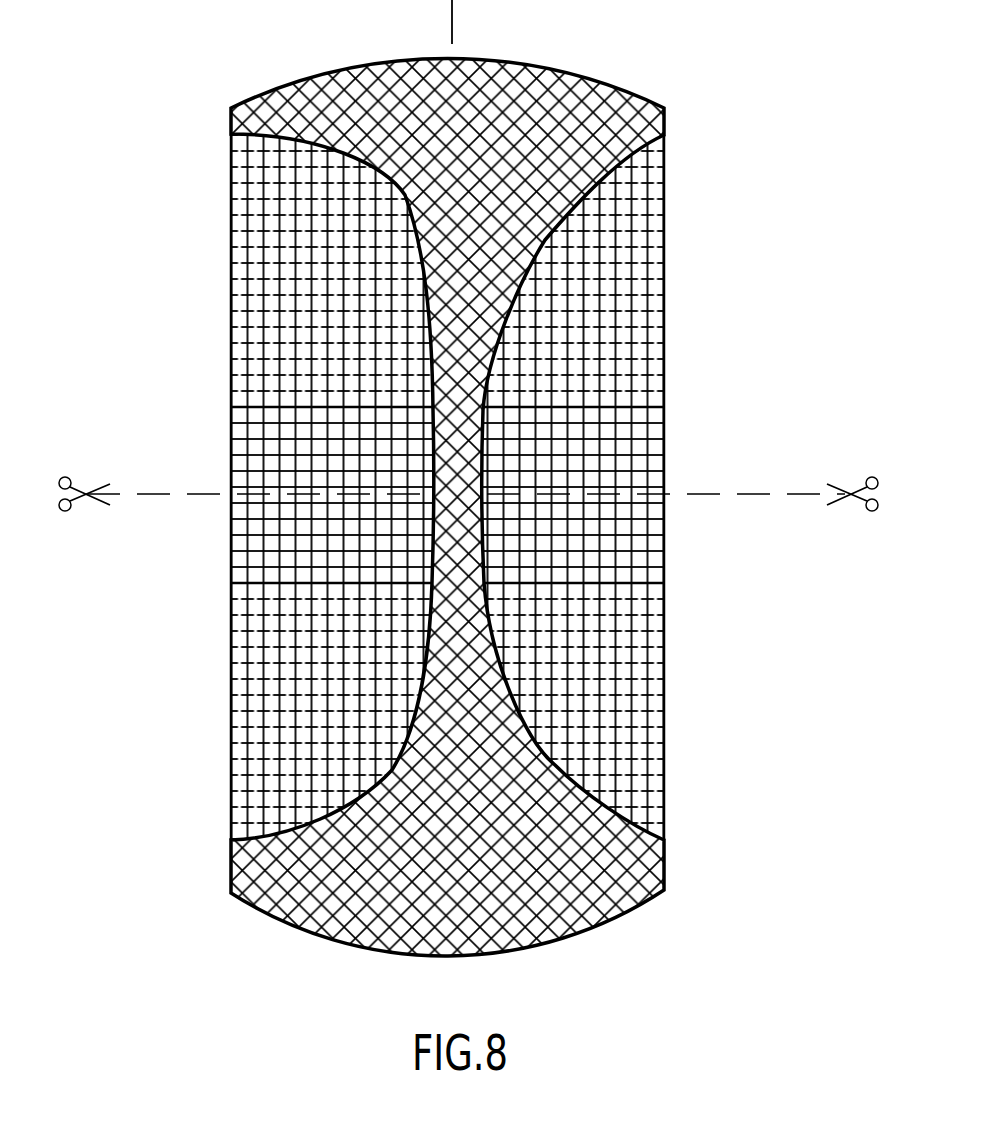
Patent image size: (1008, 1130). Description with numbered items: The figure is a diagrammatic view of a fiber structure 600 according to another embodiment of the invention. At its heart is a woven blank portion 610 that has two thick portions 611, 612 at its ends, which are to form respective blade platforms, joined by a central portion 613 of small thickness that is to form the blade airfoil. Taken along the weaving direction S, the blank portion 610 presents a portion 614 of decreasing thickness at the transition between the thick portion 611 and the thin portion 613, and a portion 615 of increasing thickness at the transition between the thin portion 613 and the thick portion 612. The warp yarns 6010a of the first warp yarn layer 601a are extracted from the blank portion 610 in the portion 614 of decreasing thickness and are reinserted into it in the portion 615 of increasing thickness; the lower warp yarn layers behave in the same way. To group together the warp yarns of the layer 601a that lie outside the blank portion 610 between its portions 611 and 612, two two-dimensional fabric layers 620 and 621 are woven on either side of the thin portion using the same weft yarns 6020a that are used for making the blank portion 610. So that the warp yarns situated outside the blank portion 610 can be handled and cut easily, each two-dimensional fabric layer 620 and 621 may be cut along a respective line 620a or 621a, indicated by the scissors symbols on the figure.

The fiber structure 600 is at (168, 255).
The weaving direction S is at (452, 12).
The blank portion 610 is at (350, 797).
The thick portion 611 is at (636, 871).
The thick portion 612 is at (540, 95).
The central portion of small thickness 613 is at (455, 398).
The portion of decreasing thickness 614 is at (480, 713).
The portion of increasing thickness 615 is at (480, 263).
The first warp yarn layer 601a is at (580, 318).
The warp yarns 6010a is at (613, 333).
The two-dimensional fabric layer 620 is at (305, 447).
The two-dimensional fabric layer 621 is at (601, 495).
The weft yarns 6020a is at (253, 505).
The cutting line 620a is at (140, 494).
The cutting line 621a is at (800, 494).